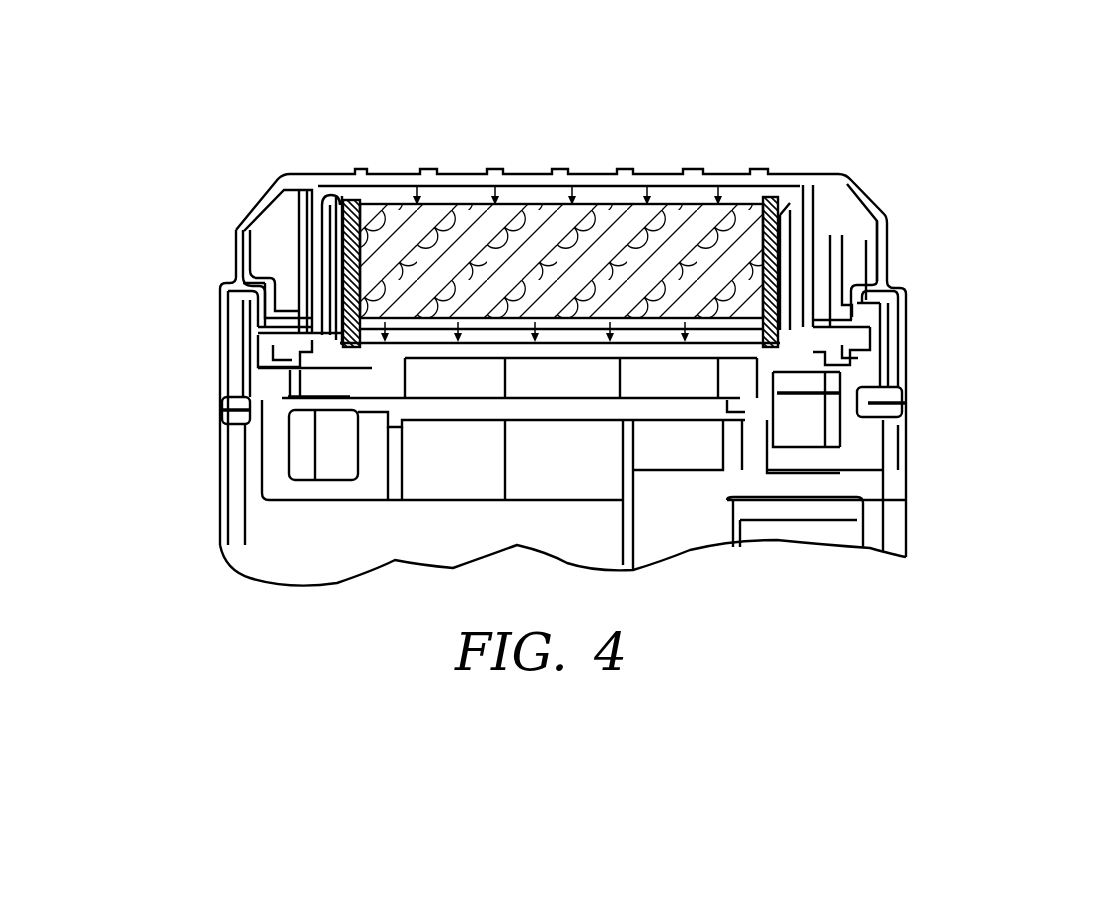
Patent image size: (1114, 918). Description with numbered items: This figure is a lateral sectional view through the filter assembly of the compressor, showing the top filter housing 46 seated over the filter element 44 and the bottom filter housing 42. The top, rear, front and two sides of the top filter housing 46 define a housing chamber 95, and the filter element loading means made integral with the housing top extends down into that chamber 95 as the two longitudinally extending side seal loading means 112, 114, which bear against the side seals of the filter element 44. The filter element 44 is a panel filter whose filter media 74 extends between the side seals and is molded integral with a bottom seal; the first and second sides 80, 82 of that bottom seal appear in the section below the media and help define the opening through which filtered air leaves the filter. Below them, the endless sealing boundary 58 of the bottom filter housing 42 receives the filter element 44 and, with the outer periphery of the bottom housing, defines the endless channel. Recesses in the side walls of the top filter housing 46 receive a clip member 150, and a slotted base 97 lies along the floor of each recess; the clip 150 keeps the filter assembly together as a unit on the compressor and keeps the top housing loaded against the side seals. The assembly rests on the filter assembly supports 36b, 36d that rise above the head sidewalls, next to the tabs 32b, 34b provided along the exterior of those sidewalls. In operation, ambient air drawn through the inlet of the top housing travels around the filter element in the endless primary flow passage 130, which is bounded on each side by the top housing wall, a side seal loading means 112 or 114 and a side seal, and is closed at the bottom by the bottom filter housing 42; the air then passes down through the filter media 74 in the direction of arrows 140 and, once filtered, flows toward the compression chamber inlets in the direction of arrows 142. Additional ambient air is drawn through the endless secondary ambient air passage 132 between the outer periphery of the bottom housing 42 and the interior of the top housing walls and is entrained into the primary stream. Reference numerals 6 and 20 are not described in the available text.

The frame member 6 is at (826, 305).
The housing base 20 is at (897, 490).
The tab 32b is at (228, 413).
The tab 34b is at (895, 403).
The filter assembly support 36b is at (258, 380).
The filter assembly support 36d is at (890, 372).
The bottom filter housing 42 is at (808, 392).
The filter element 44 is at (468, 196).
The top filter housing 46 is at (721, 155).
The endless sealing boundary 58 is at (447, 440).
The filter media 74 is at (607, 205).
The first side of bottom seal 80 is at (722, 348).
The second side of bottom seal 82 is at (380, 350).
The housing chamber 95 is at (325, 250).
The slotted base 97 is at (283, 315).
The side seal loading means 112 is at (772, 195).
The side seal loading means 114 is at (349, 195).
The primary flow passage 130 is at (313, 200).
The secondary ambient air passage 132 is at (250, 402).
The arrows 140 is at (482, 190).
The arrows 142 is at (595, 460).
The clip member 150 is at (250, 283).